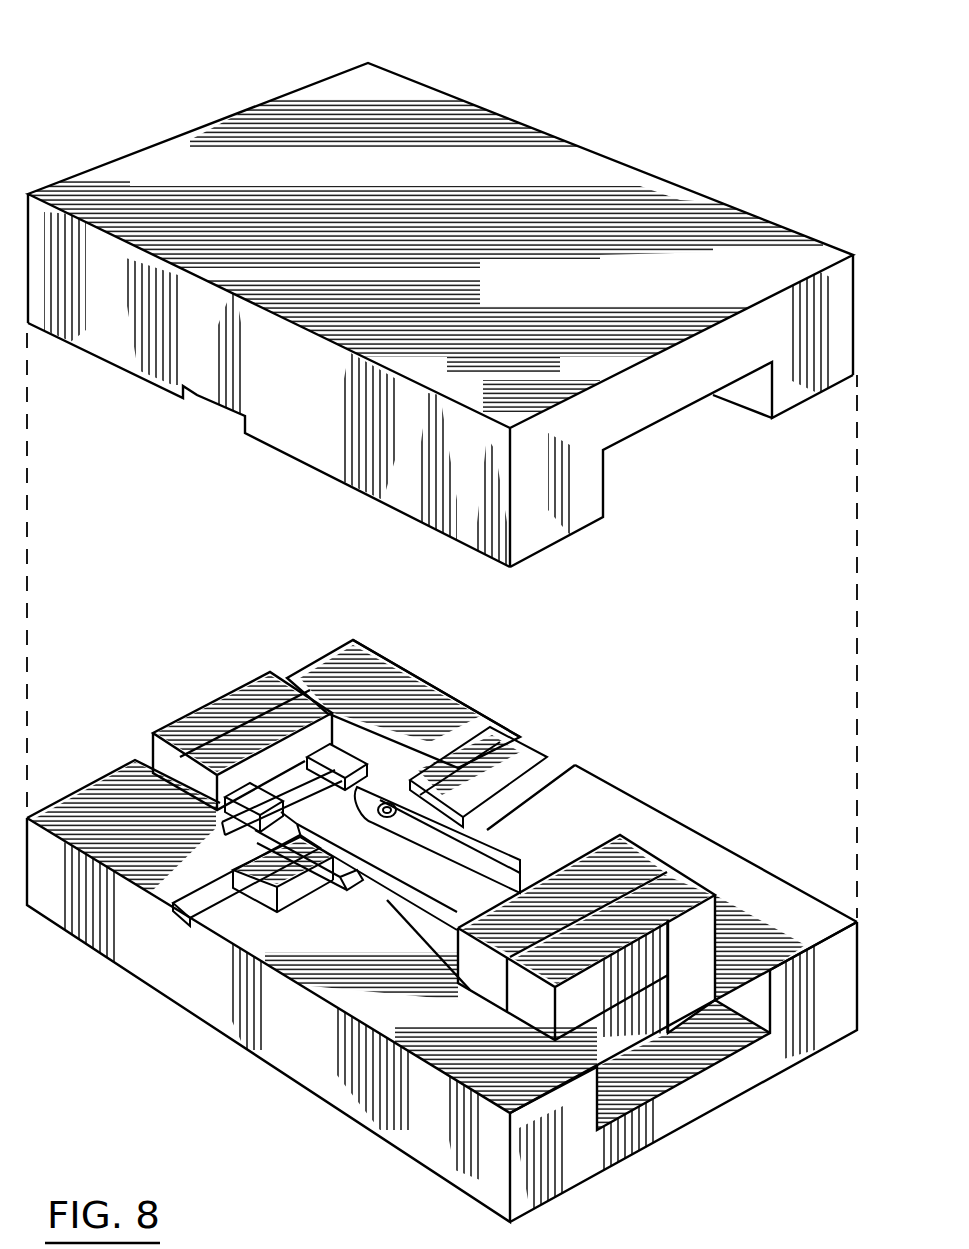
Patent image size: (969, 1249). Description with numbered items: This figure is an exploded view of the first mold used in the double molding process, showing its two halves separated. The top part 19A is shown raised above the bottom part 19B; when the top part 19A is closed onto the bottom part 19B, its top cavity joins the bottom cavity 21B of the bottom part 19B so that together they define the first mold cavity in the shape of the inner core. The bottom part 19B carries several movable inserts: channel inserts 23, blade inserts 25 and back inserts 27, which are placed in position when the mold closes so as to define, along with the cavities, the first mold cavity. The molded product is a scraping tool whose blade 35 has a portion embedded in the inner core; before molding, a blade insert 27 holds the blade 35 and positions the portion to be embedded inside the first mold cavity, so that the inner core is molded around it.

The top part 19A is at (580, 90).
The bottom part 19B is at (200, 1063).
The bottom cavity 21B is at (403, 803).
The channel insert 23 is at (282, 851).
The blade insert 25 is at (628, 867).
The back insert 27 is at (343, 767).
The blade 35 is at (505, 860).